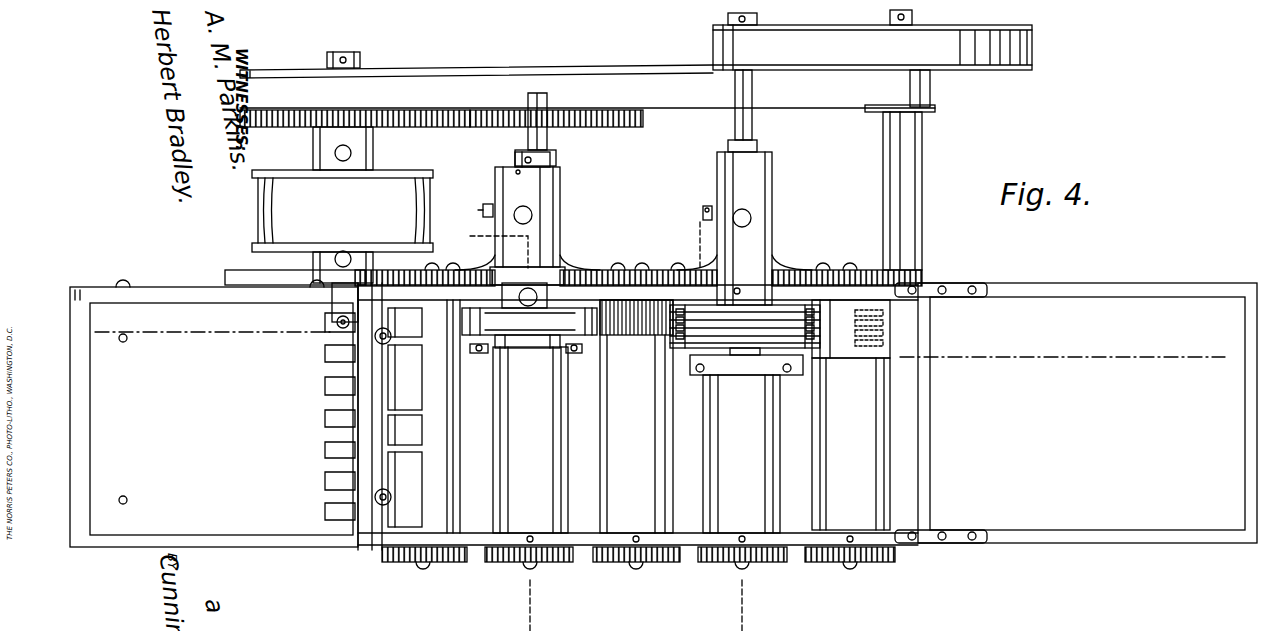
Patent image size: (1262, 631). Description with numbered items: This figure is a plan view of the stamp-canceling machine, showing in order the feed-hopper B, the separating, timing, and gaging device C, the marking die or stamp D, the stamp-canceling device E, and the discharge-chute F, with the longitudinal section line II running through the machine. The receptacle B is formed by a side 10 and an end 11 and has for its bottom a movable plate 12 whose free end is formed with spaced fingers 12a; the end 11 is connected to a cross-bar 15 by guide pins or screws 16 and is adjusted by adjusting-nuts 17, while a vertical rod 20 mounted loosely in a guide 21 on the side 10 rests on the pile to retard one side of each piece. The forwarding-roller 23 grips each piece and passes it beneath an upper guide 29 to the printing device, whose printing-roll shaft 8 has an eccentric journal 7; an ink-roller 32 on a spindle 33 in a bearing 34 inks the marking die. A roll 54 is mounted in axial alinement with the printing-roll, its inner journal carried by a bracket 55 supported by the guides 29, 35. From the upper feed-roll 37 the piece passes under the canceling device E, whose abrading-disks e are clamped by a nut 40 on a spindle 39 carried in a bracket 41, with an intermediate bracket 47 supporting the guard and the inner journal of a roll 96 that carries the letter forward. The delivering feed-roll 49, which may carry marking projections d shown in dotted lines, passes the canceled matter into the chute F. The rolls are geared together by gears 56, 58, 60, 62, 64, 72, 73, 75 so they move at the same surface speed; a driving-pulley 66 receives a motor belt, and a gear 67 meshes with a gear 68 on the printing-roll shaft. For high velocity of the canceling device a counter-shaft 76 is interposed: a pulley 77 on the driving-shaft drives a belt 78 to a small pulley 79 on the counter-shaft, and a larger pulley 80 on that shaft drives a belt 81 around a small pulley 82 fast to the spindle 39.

The journal 7 is at (470, 236).
The shaft 8 is at (697, 237).
The receptacle side 10 is at (197, 296).
The receptacle end 11 is at (362, 372).
The movable plate 12 is at (222, 455).
The spaced fingers 12a is at (337, 433).
The cross-bar 15 is at (382, 462).
The guide pins or screws 16 is at (378, 412).
The adjusting-nuts 17 is at (398, 417).
The vertical rod 20 is at (335, 337).
The guide 21 is at (332, 312).
The forwarding-roller 23 is at (408, 372).
The upper guide 29 is at (467, 416).
The ink-roller 32 is at (529, 309).
The spindle 33 is at (528, 348).
The bearing 34 is at (527, 218).
The guide 35 is at (587, 426).
The upper feed-roll 37 is at (636, 416).
The spindle 39 is at (752, 125).
The nut 40 is at (745, 360).
The bracket 41 is at (772, 175).
The intermediate bracket 47 is at (776, 372).
The delivering feed-roll 49 is at (851, 444).
The roll 54 is at (530, 440).
The bracket 55 is at (572, 353).
The gear 56 is at (428, 565).
The gear 58 is at (540, 565).
The gear 60 is at (645, 565).
The gear 62 is at (750, 565).
The gear 64 is at (857, 565).
The driving-pulley 66 is at (329, 206).
The gear 67 is at (404, 127).
The gear 68 is at (604, 127).
The toothed wheel 72 is at (448, 270).
The gear 73 is at (600, 270).
The gear 75 is at (870, 270).
The counter-shaft 76 is at (922, 125).
The pulley 77 is at (408, 68).
The belt 78 is at (645, 62).
The small pulley 79 is at (935, 110).
The larger pulley 80 is at (1030, 70).
The belt 81 is at (872, 47).
The small pulley 82 is at (728, 20).
The roll 96 is at (741, 454).
The feed-hopper B is at (214, 413).
The separating, timing, and gaging device C is at (366, 567).
The marking die or stamp D is at (471, 350).
The stamp-canceling device E is at (745, 338).
The discharge-chute F is at (1076, 413).
The abrading-disks e is at (851, 329).
The projections d is at (890, 318).
The section line II is at (663, 343).